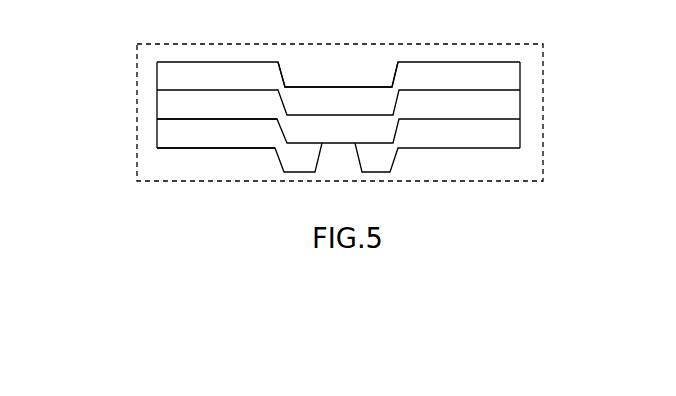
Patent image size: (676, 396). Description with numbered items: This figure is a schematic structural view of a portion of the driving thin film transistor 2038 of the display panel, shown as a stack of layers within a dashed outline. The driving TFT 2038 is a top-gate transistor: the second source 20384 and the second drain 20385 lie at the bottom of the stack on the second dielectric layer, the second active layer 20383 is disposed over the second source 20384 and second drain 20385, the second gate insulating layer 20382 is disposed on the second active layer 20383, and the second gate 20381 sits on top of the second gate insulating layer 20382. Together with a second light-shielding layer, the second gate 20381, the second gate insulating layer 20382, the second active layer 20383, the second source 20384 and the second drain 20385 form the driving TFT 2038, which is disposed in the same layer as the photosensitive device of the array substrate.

The driving thin film transistor 2038 is at (156, 26).
The second gate 20381 is at (344, 76).
The second gate insulating layer 20382 is at (483, 75).
The second active layer 20383 is at (483, 103).
The second source 20384 is at (193, 128).
The second drain 20385 is at (485, 136).